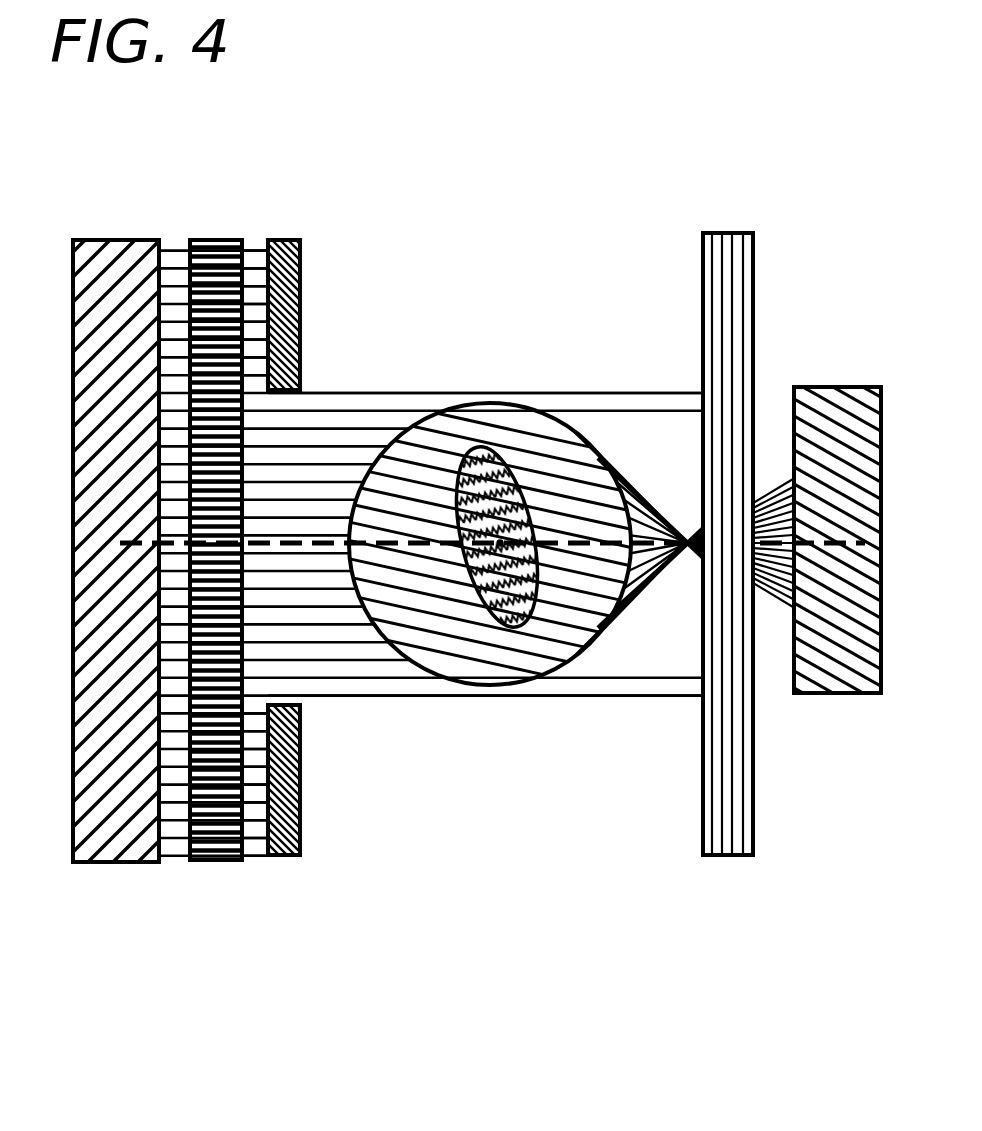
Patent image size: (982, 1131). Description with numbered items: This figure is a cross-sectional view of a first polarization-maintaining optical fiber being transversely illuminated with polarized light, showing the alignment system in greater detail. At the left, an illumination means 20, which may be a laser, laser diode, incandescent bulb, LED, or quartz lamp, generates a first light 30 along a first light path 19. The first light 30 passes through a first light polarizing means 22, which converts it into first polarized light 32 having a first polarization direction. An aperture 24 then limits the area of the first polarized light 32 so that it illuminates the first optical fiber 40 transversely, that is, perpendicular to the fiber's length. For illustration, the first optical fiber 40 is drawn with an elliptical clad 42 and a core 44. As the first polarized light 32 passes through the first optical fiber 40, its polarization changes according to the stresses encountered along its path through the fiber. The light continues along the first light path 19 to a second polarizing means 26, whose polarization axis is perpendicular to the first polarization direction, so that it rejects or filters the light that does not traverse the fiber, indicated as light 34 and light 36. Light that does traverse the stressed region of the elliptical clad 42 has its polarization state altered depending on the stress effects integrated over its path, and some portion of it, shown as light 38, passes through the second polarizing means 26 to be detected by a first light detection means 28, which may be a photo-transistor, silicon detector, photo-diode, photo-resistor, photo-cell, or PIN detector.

The first light path 19 is at (312, 543).
The illumination means 20 is at (110, 240).
The first light polarizing means 22 is at (220, 240).
The aperture 24 is at (300, 272).
The second polarizing means 26 is at (727, 233).
The first light detection means 28 is at (845, 387).
The first light 30 is at (175, 810).
The first polarized light 32 is at (253, 810).
The light not traversing the fiber 34 is at (683, 393).
The light not traversing the fiber 36 is at (690, 577).
The light passing through the second polarizing filter 38 is at (770, 597).
The first optical fiber 40 is at (537, 400).
The elliptical clad 42 is at (472, 450).
The core 44 is at (532, 540).